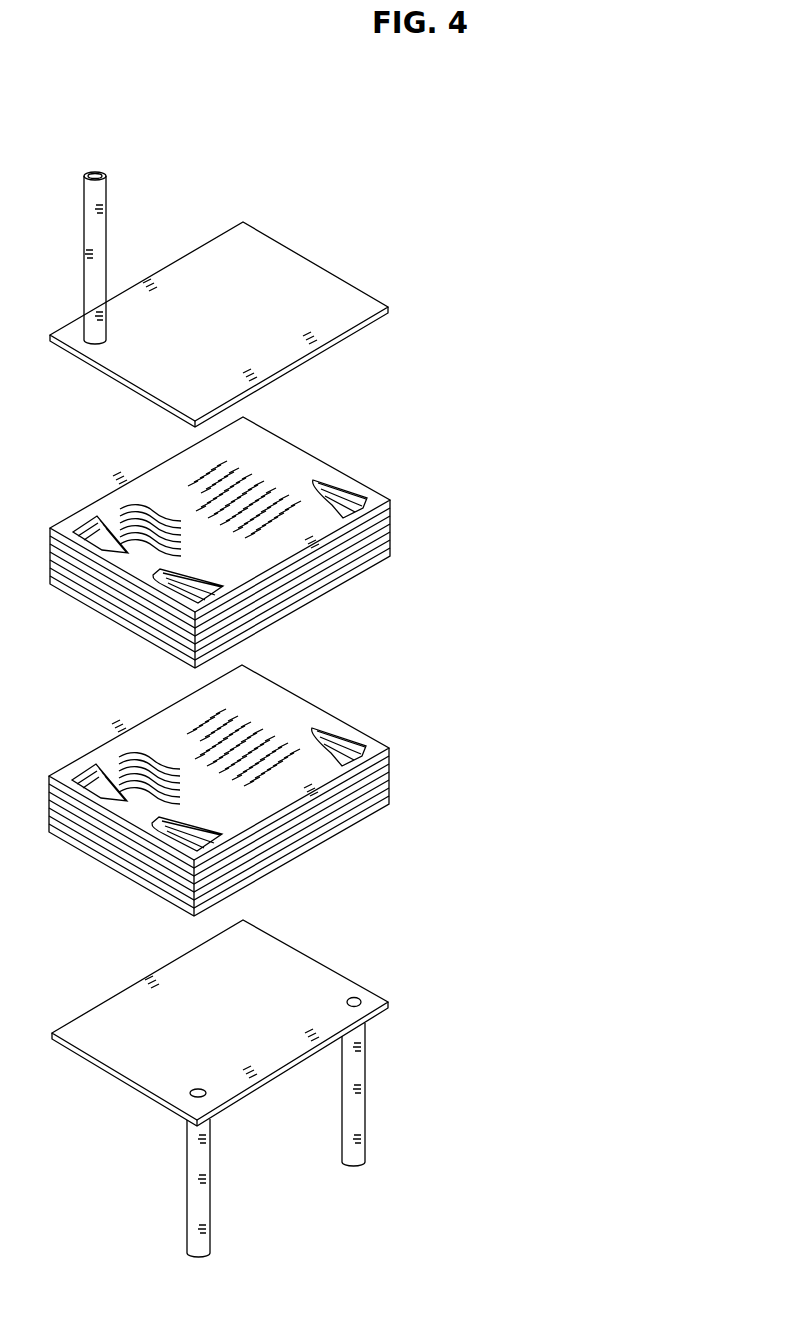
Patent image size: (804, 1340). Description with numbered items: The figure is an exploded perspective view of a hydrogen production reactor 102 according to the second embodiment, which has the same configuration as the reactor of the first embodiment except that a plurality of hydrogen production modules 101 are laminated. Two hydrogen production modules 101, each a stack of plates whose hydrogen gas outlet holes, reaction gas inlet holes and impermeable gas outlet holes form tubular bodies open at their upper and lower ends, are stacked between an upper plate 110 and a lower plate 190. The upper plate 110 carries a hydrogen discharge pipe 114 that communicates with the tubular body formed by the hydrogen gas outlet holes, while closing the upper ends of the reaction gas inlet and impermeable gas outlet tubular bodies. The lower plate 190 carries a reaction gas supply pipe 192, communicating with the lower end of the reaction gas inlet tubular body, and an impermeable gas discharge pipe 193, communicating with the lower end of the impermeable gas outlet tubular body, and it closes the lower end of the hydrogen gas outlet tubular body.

The hydrogen production reactor 102 is at (465, 130).
The upper plate 110 is at (388, 307).
The hydrogen discharge pipe 114 is at (97, 202).
The hydrogen production module 101 is at (410, 528).
The lower plate 190 is at (388, 1002).
The reaction gas supply pipe 192 is at (358, 1107).
The impermeable gas discharge pipe 193 is at (198, 1203).